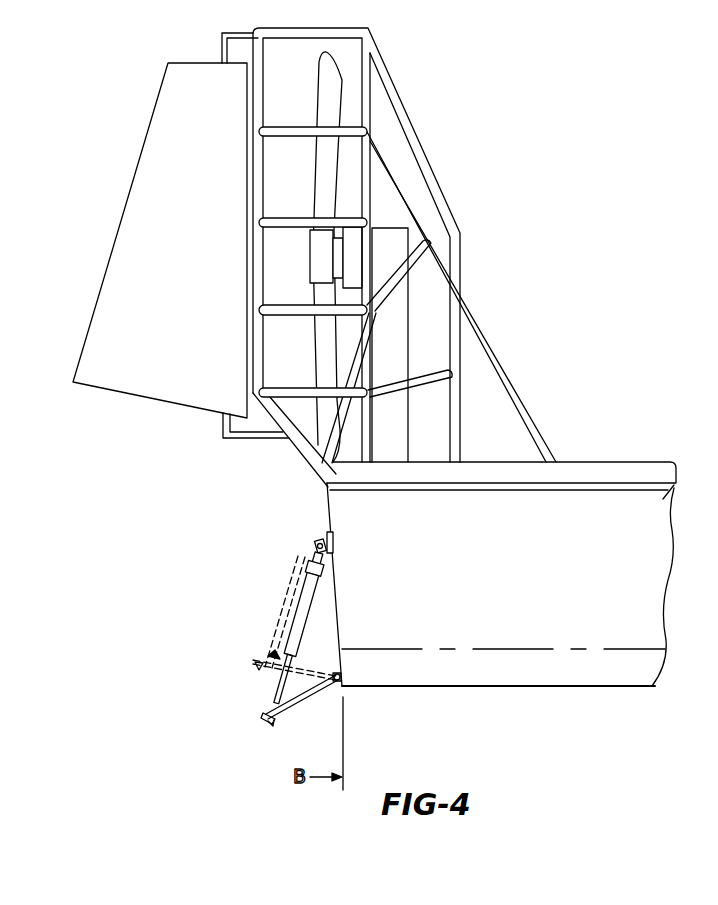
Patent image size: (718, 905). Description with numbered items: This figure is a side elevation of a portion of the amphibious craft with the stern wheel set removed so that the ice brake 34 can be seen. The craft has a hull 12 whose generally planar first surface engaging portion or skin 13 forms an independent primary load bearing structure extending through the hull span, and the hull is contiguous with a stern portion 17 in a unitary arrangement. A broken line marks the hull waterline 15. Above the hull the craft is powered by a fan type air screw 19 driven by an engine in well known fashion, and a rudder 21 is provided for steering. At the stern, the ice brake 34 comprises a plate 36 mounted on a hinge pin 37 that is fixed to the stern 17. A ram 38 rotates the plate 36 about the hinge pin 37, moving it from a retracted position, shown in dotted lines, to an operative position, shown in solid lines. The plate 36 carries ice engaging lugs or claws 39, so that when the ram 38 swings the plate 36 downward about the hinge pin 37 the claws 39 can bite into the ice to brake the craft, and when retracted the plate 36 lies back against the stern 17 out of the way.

The hull 12 is at (450, 700).
The first surface engaging portion 13 is at (513, 687).
The hull waterline 15 is at (498, 649).
The stern portion 17 is at (340, 597).
The fan type air screw 19 is at (464, 157).
The rudder 21 is at (206, 295).
The ice brake 34 is at (200, 681).
The plate 36 is at (308, 700).
The hinge pin 37 is at (345, 683).
The ram 38 is at (300, 624).
The ice engaging lugs or claws 39 is at (267, 722).